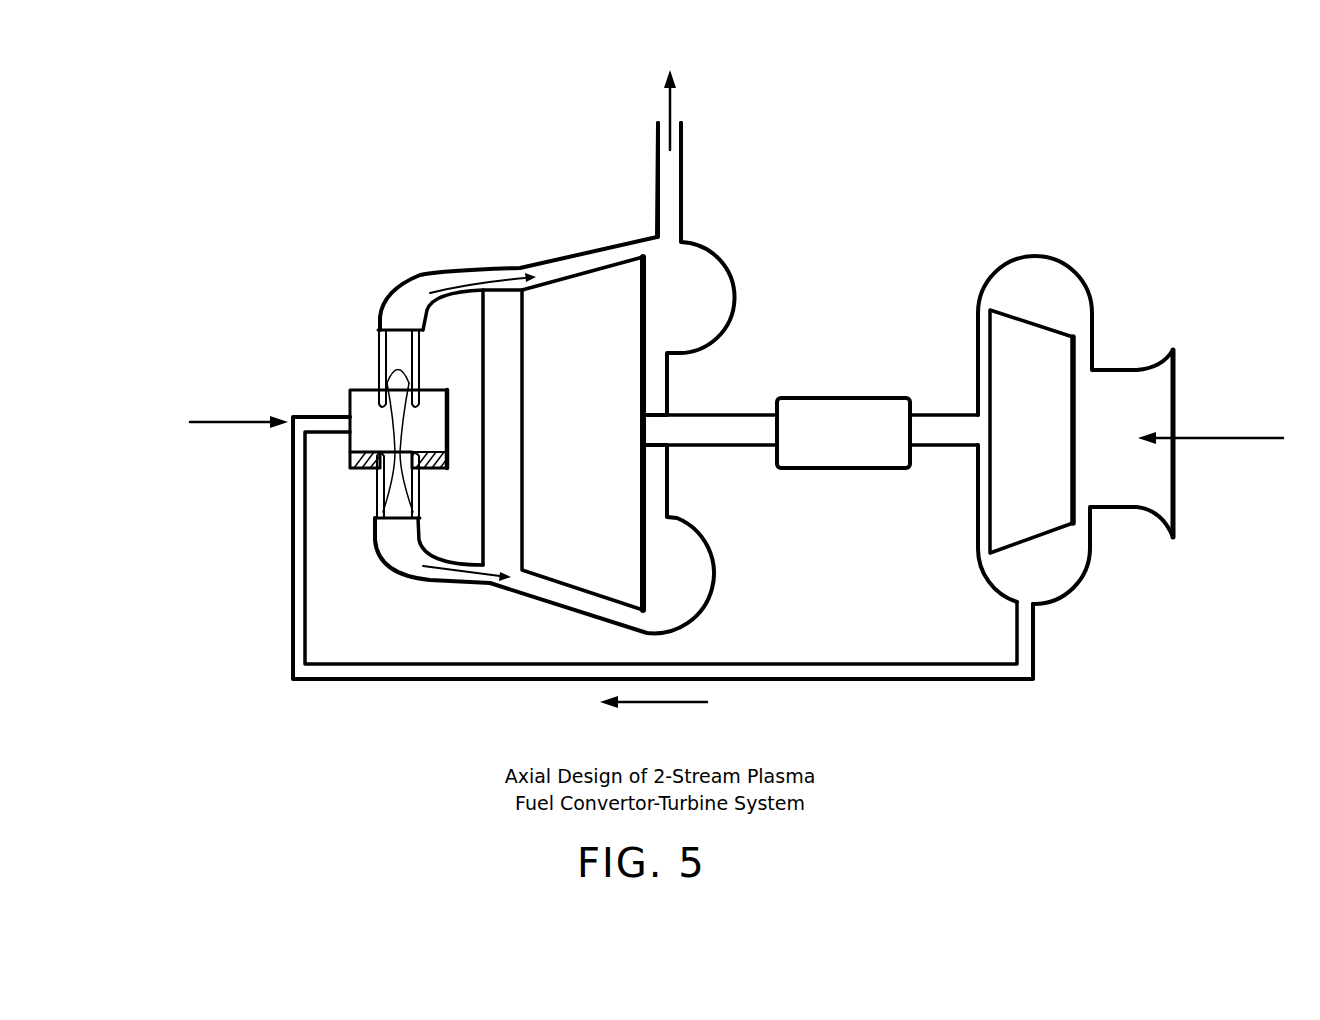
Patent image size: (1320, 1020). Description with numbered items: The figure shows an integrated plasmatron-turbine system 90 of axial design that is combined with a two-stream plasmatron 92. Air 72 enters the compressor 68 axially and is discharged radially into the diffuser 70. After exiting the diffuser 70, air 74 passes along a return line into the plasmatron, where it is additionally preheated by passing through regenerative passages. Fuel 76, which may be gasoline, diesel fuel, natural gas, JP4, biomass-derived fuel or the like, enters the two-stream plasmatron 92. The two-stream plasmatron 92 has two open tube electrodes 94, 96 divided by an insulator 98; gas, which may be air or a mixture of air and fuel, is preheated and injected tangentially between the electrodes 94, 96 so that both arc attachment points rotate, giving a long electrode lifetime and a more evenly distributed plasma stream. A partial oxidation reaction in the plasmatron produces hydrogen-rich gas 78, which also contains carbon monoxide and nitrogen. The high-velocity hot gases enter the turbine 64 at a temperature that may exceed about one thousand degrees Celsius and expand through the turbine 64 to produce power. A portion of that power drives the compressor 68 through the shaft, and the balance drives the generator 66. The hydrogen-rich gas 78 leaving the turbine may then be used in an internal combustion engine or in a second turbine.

The system 90 is at (473, 157).
The turbine 64 is at (575, 290).
The generator 66 is at (847, 408).
The compressor 68 is at (1018, 335).
The diffuser 70 is at (1067, 307).
The air 72 is at (1210, 437).
The air 74 is at (663, 573).
The fuel 76 is at (254, 420).
The hydrogen-rich gas 78 is at (665, 107).
The two-stream plasmatron 92 is at (362, 392).
The open tube electrode 94 is at (378, 346).
The open tube electrode 96 is at (374, 494).
The insulator 98 is at (364, 470).